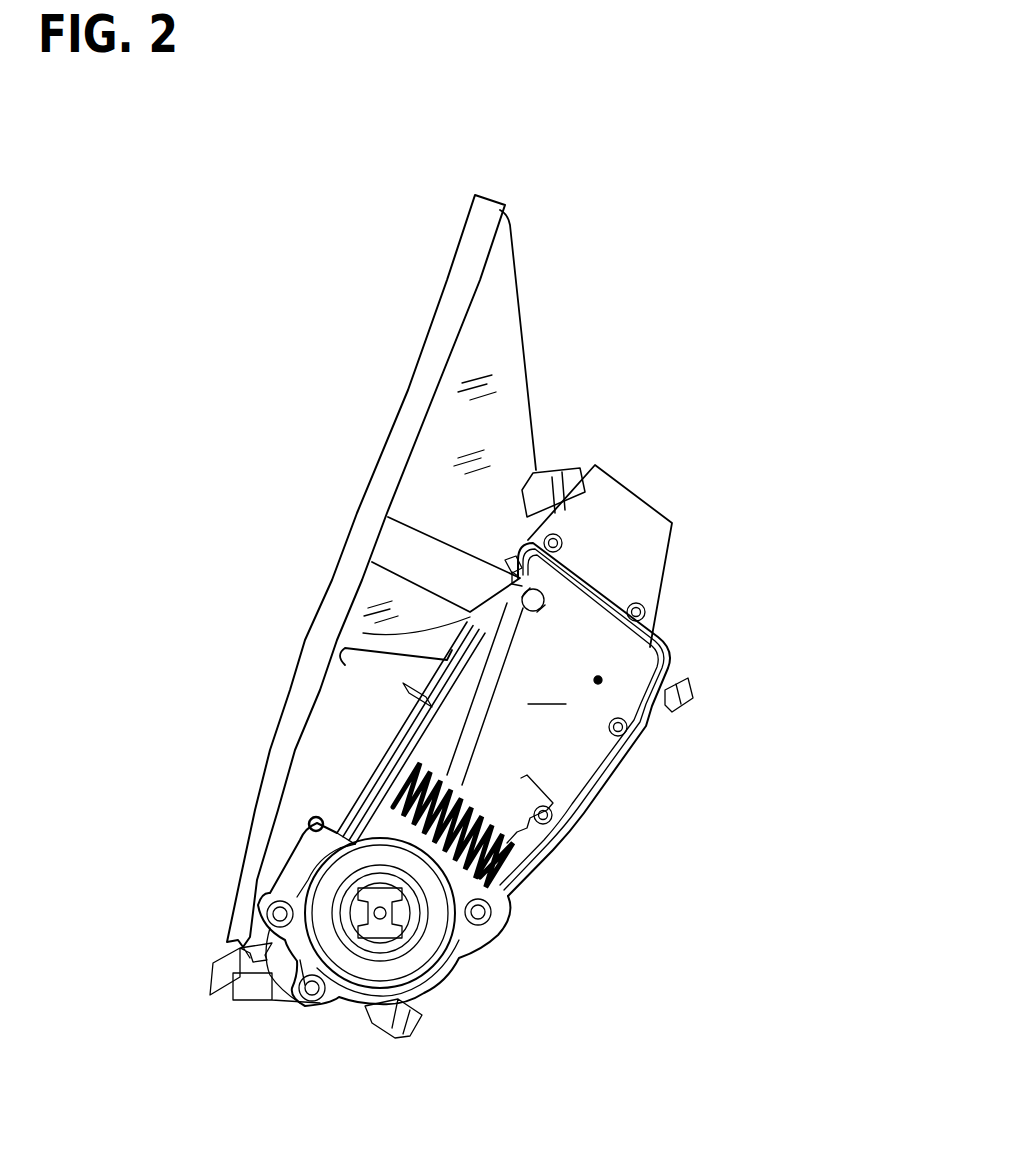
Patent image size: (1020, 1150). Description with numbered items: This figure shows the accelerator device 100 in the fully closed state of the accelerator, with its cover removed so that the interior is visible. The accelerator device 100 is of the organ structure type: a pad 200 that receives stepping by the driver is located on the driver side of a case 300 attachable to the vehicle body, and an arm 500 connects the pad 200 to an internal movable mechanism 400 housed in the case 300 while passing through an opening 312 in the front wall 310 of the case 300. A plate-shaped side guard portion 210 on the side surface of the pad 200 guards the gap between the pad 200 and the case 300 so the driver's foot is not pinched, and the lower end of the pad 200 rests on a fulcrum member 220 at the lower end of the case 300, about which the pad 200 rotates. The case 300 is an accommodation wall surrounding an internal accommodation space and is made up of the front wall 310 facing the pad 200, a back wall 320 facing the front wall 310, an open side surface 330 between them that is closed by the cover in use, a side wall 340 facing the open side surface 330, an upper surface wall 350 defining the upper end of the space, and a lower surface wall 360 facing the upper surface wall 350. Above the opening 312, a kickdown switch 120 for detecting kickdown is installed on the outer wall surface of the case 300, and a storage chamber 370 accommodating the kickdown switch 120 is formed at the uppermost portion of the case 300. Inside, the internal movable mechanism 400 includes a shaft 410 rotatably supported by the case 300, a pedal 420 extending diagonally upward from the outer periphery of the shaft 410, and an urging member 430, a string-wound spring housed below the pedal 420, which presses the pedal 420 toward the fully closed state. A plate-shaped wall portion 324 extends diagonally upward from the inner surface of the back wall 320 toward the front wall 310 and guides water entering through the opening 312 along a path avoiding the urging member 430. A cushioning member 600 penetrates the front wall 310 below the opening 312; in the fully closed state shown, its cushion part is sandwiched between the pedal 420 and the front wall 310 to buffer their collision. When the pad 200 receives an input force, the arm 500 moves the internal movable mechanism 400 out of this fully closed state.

The accelerator device 100 is at (742, 328).
The kickdown switch 120 is at (560, 470).
The pad 200 is at (457, 307).
The side guard portion 210 is at (500, 318).
The fulcrum member 220 is at (213, 997).
The case 300 is at (675, 513).
The front wall 310 is at (387, 727).
The opening 312 is at (464, 617).
The back wall 320 is at (630, 732).
The wall portion 324 is at (521, 778).
The open side surface 330 is at (590, 738).
The side wall 340 is at (603, 677).
The upper surface wall 350 is at (595, 610).
The lower surface wall 360 is at (290, 957).
The storage chamber 370 is at (627, 513).
The internal movable mechanism 400 is at (702, 802).
The shaft 410 is at (407, 913).
The pedal 420 is at (478, 685).
The urging member 430 is at (527, 873).
The arm 500 is at (357, 517).
The cushioning member 600 is at (345, 665).